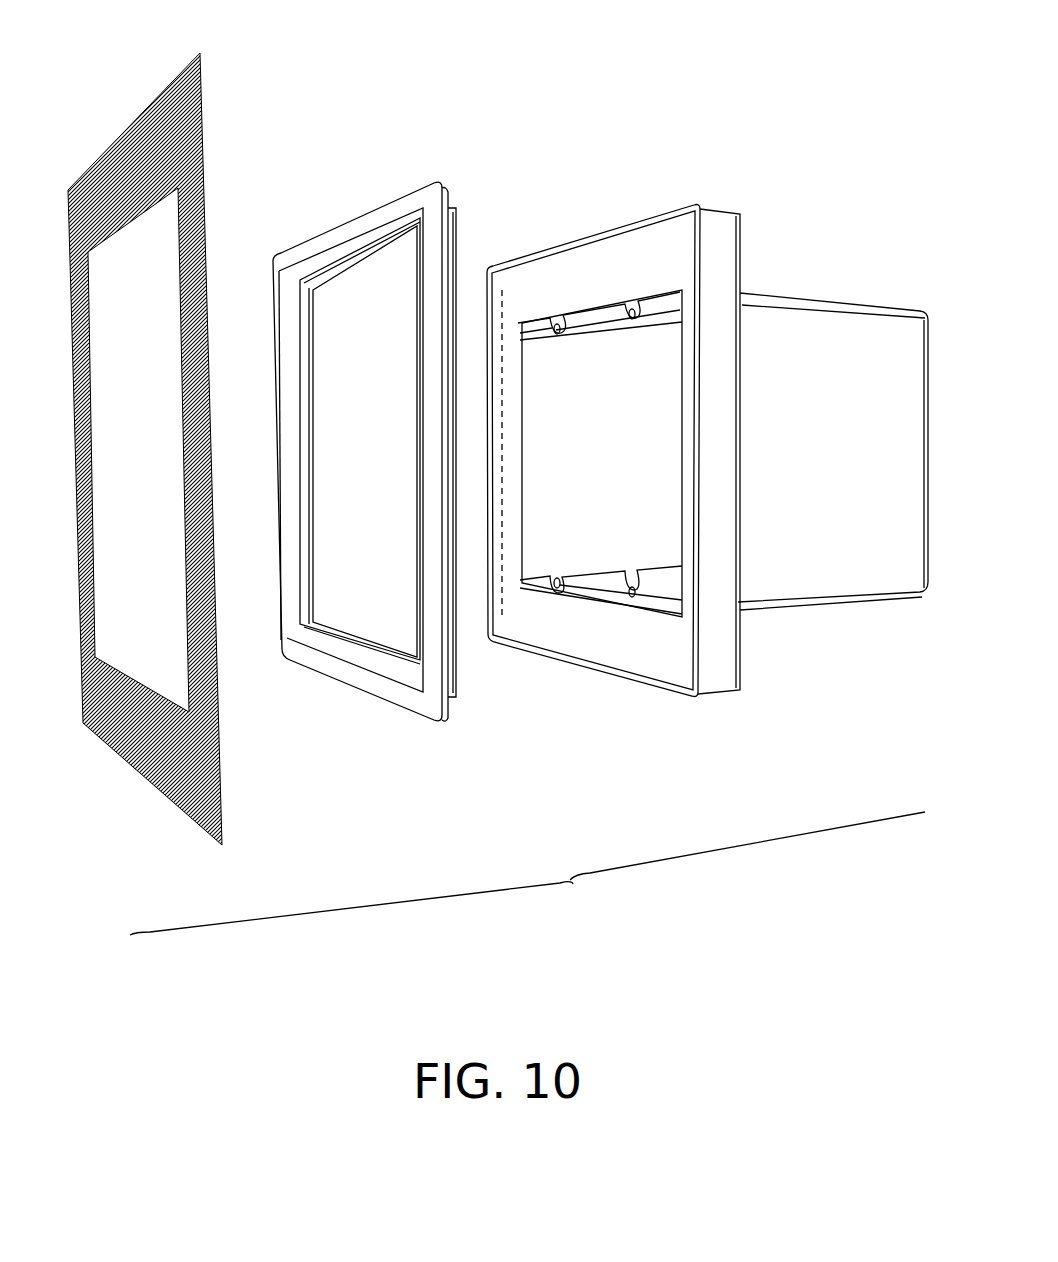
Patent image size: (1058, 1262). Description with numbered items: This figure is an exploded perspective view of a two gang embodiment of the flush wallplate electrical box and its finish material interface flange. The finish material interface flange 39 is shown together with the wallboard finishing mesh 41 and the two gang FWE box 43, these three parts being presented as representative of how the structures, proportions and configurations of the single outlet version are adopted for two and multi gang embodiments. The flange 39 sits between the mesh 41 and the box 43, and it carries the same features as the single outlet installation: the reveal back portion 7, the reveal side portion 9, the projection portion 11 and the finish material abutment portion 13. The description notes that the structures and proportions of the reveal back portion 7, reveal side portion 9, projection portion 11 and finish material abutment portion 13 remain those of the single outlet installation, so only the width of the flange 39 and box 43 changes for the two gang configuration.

The reveal back portion 7 is at (380, 252).
The reveal side portion 9 is at (288, 313).
The projection portion 11 is at (385, 225).
The finish material abutment portion 13 is at (420, 195).
The finish material interface flange 39 is at (399, 394).
The wallboard finishing mesh 41 is at (238, 788).
The FWE box 43 is at (824, 622).